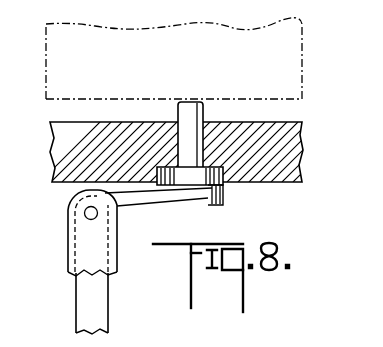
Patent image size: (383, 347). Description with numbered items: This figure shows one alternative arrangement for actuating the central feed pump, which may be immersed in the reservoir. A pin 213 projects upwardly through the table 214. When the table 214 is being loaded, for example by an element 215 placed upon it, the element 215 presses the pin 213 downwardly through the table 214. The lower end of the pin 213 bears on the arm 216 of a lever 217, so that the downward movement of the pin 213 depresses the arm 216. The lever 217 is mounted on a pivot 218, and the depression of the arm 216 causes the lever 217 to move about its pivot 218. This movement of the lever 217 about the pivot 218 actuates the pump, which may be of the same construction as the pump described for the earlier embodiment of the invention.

The pin 213 is at (200, 113).
The table 214 is at (302, 150).
The element 215 is at (302, 43).
The arm 216 is at (207, 198).
The lever 217 is at (77, 312).
The pivot 218 is at (84, 214).